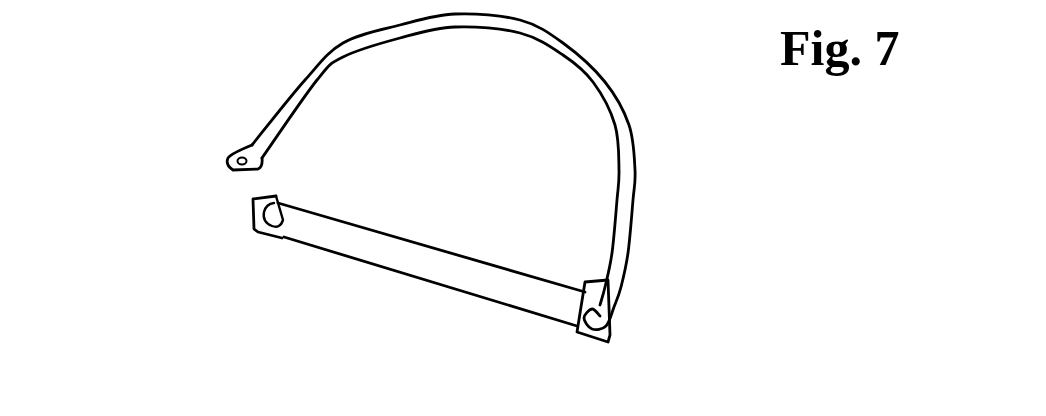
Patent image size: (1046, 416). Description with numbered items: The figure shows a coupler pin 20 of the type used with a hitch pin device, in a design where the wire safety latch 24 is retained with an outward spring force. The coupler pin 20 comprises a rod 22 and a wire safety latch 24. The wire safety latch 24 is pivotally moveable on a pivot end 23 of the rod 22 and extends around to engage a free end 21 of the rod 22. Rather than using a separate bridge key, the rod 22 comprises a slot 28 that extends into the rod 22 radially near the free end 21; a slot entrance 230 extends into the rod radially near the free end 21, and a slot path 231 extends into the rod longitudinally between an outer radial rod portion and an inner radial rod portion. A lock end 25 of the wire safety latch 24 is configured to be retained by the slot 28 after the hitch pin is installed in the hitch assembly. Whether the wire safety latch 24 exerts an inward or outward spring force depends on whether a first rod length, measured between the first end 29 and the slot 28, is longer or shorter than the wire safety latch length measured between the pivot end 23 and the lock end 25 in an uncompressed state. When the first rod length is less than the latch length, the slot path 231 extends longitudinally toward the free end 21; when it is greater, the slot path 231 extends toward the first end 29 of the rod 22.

The coupler pin 20 is at (277, 53).
The free end 21 is at (253, 218).
The rod 22 is at (377, 266).
The pivot end 23 is at (606, 328).
The wire safety latch 24 is at (566, 44).
The lock end 25 is at (283, 128).
The slot 28 is at (286, 244).
The first end 29 is at (529, 297).
The slot entrance 230 is at (292, 212).
The slot path 231 is at (276, 207).